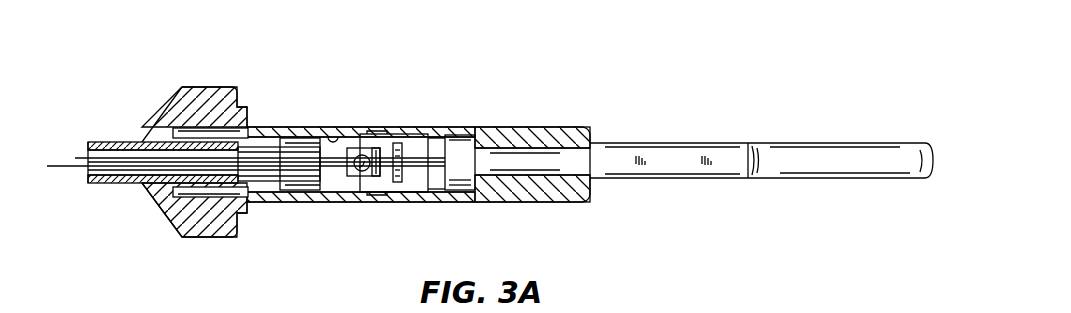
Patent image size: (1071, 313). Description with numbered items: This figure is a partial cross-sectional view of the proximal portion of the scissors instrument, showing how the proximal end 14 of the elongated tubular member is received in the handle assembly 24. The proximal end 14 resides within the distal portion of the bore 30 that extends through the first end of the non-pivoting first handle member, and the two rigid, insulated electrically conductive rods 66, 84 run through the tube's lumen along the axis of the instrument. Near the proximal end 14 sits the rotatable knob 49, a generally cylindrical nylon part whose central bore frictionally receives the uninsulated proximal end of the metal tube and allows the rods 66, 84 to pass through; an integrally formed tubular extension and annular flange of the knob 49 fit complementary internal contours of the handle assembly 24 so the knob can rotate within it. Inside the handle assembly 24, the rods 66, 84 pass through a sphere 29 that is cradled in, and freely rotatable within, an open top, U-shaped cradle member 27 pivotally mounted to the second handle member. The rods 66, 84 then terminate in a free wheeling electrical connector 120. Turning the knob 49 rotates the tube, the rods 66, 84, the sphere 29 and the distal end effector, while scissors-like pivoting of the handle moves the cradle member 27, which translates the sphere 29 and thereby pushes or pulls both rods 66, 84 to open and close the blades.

The proximal end 14 is at (107, 142).
The handle assembly 24 is at (685, 112).
The cradle member 27 is at (376, 150).
The sphere 29 is at (360, 155).
The bore 30 is at (340, 139).
The knob 49 is at (203, 87).
The conductive rod 66 is at (273, 172).
The conductive rod 84 is at (268, 158).
The free wheeling electrical connector 120 is at (458, 142).